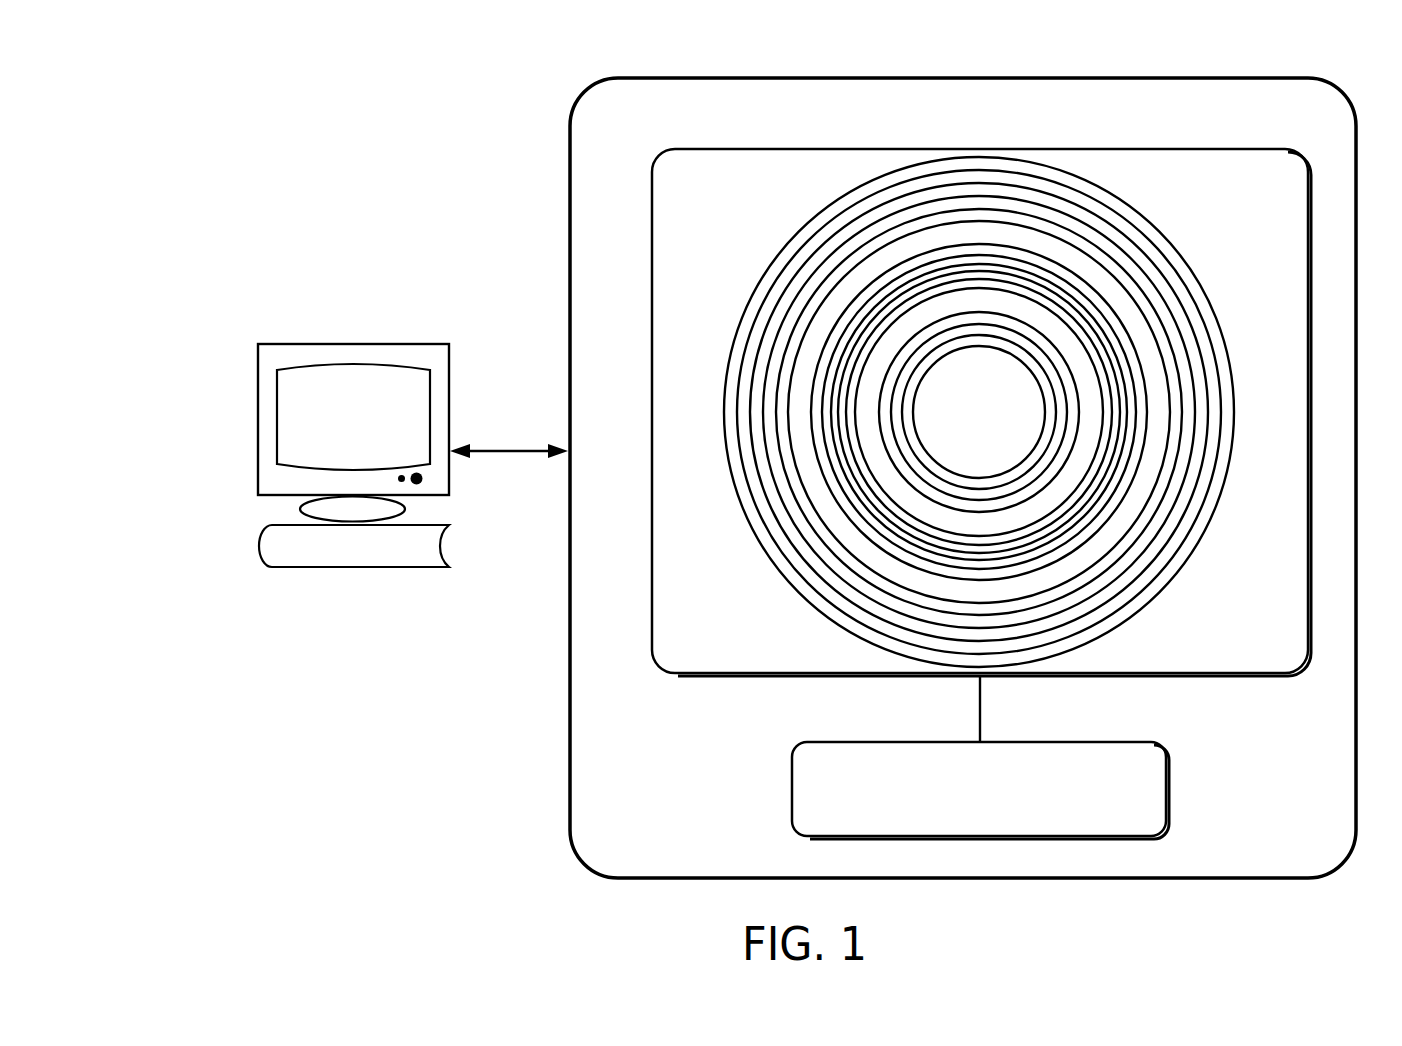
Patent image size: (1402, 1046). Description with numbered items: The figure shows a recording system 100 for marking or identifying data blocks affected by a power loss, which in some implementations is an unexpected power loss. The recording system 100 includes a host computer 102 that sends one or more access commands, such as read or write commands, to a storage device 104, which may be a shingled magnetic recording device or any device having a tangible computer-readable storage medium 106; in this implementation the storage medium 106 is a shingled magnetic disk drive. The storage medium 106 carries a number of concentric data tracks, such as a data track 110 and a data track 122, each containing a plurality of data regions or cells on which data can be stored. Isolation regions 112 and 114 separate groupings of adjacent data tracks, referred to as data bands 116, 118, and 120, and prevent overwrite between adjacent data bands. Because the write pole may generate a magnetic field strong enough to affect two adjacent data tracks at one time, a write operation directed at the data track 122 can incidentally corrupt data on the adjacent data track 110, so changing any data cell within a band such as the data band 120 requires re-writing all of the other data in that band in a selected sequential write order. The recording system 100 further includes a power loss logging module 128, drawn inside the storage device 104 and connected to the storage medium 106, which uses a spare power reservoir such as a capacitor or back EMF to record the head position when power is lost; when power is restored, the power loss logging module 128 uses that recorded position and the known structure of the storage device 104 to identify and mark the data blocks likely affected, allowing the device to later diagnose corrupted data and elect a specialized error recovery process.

The recording system 100 is at (306, 98).
The host computer 102 is at (355, 342).
The storage device 104 is at (568, 752).
The storage medium 106 is at (792, 149).
The data track 110 is at (800, 257).
The isolation region 112 is at (1135, 307).
The isolation region 114 is at (1042, 322).
The data band 116 is at (1040, 443).
The data band 118 is at (1098, 457).
The data band 120 is at (1167, 457).
The data track 122 is at (758, 290).
The power loss logging module 128 is at (1000, 815).